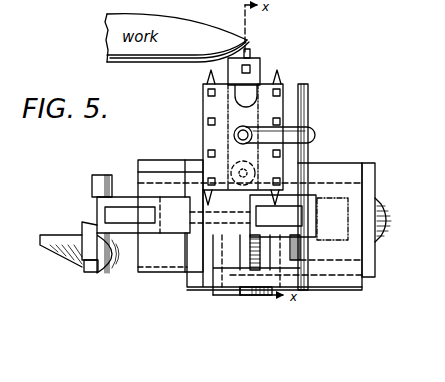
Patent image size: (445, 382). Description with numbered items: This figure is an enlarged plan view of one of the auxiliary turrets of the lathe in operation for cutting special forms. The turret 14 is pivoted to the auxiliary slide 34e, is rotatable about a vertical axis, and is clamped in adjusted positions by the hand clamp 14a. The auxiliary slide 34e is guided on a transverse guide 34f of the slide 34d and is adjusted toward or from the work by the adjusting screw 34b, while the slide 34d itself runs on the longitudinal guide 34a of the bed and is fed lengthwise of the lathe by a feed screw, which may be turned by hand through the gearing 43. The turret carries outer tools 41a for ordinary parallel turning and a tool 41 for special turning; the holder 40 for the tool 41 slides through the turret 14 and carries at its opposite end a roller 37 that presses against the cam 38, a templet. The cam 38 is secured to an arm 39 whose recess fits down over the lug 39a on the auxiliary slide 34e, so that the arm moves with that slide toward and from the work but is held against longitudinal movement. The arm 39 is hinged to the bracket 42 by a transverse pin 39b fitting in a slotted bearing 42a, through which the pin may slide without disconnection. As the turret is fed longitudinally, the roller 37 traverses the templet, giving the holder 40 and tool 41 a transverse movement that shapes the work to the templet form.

The turret 14 is at (203, 125).
The hand clamp 14a is at (315, 137).
The longitudinal guide 34a is at (190, 240).
The adjusting screw 34b is at (302, 262).
The slide 34d is at (212, 278).
The auxiliary slide 34e is at (312, 185).
The transverse guide 34f is at (283, 247).
The roller 37 is at (235, 165).
The cam 38 is at (173, 215).
The arm 39 is at (312, 203).
The lug 39a is at (279, 216).
The transverse pin 39b is at (108, 177).
The holder 40 is at (262, 73).
The tool 41 is at (251, 58).
The outer tools 41a is at (207, 78).
The bracket 42 is at (84, 227).
The slotted bearing 42a is at (100, 270).
The gearing 43 is at (394, 220).